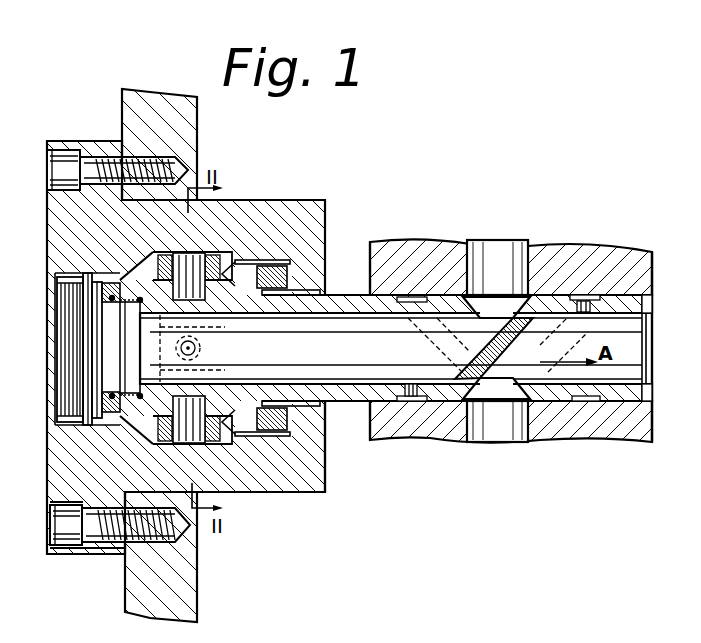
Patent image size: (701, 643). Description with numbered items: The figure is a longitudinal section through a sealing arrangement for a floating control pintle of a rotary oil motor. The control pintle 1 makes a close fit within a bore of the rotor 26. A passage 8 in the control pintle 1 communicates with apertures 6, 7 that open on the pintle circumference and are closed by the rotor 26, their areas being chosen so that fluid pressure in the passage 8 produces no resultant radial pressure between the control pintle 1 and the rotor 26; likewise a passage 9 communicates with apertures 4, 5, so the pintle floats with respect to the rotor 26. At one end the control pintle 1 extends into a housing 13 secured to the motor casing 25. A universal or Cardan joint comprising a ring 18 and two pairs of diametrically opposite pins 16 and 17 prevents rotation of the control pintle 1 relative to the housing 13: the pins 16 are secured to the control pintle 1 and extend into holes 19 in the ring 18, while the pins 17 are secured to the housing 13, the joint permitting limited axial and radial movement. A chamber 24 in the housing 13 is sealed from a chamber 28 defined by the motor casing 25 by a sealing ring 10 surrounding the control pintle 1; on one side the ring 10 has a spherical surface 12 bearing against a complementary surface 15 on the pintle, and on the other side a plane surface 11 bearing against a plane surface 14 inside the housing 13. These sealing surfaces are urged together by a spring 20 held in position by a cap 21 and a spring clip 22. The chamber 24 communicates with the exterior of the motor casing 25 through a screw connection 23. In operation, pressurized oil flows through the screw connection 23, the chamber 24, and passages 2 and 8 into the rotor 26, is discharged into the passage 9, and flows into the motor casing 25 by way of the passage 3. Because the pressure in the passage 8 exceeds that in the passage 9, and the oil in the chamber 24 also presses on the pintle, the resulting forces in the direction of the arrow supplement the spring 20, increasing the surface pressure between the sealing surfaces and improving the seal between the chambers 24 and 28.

The control pintle 1 is at (653, 392).
The passage 2 is at (385, 403).
The passage 3 is at (636, 347).
The aperture 4 is at (421, 290).
The aperture 5 is at (587, 296).
The aperture 6 is at (413, 401).
The aperture 7 is at (587, 401).
The passage 8 is at (496, 312).
The passage 9 is at (500, 399).
The sealing ring 10 is at (304, 286).
The plane surface 11 is at (305, 289).
The spherical surface 12 is at (281, 262).
The housing 13 is at (80, 487).
The plane surface 14 is at (325, 412).
The complementary surface 15 is at (243, 258).
The pins 16 is at (240, 493).
The pins 17 is at (247, 422).
The ring 18 is at (128, 248).
The holes 19 is at (298, 478).
The spring 20 is at (135, 412).
The cap 21 is at (105, 268).
The spring clip 22 is at (108, 425).
The screw connection 23 is at (60, 338).
The chamber 24 is at (133, 350).
The motor casing 25 is at (127, 583).
The rotor 26 is at (638, 270).
The chamber 28 is at (334, 210).